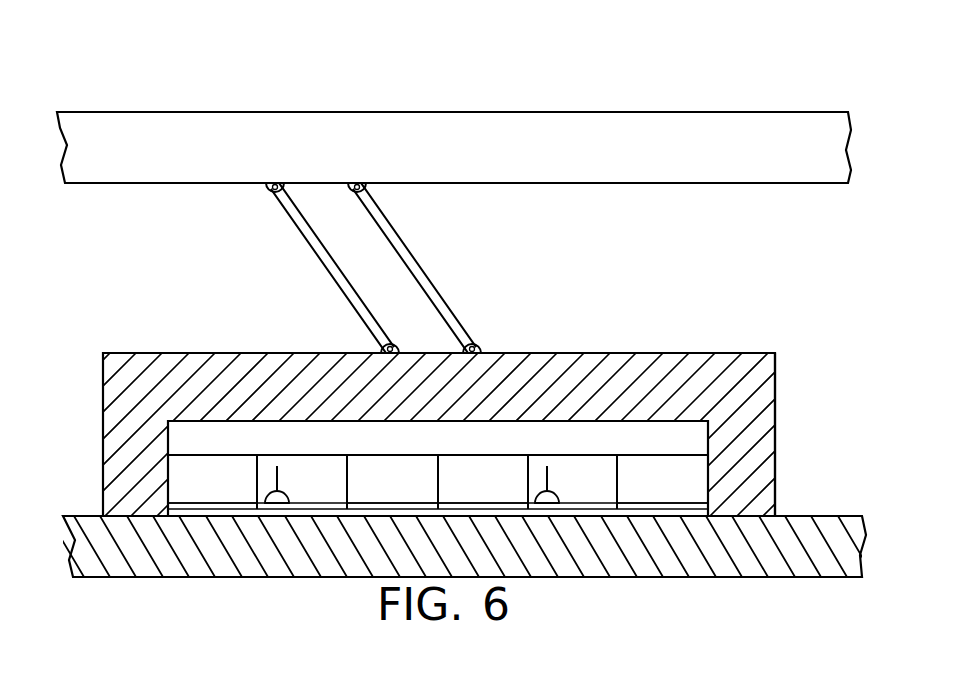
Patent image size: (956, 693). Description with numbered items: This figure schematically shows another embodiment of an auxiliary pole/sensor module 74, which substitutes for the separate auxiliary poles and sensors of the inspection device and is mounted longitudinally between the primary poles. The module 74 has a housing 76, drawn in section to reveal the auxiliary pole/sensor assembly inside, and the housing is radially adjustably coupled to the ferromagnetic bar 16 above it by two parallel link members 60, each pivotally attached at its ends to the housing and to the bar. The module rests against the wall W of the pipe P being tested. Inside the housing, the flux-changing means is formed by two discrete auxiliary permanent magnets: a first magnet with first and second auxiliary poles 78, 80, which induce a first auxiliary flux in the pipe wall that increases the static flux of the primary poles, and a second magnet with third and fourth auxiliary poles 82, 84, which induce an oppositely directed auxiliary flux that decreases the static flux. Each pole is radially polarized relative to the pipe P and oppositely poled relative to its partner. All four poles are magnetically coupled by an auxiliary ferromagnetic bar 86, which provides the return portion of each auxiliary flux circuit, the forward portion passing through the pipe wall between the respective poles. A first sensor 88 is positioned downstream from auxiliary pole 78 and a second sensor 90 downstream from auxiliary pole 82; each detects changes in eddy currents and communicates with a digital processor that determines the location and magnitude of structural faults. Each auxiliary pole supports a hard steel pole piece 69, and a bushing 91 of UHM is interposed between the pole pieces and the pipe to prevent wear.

The ferromagnetic bar 16 is at (585, 112).
The parallel link members 60 is at (397, 258).
The auxiliary pole/sensor module 74 is at (730, 342).
The housing 76 is at (776, 396).
The first auxiliary pole 78 is at (243, 469).
The second auxiliary pole 80 is at (367, 474).
The third auxiliary pole 82 is at (512, 470).
The fourth auxiliary pole 84 is at (638, 476).
The auxiliary ferromagnetic bar 86 is at (455, 452).
The first sensor 88 is at (290, 482).
The second sensor 90 is at (550, 477).
The pole piece 69 is at (624, 502).
The bushing 91 is at (172, 511).
The pipe wall W is at (795, 516).
The pipe P is at (840, 503).